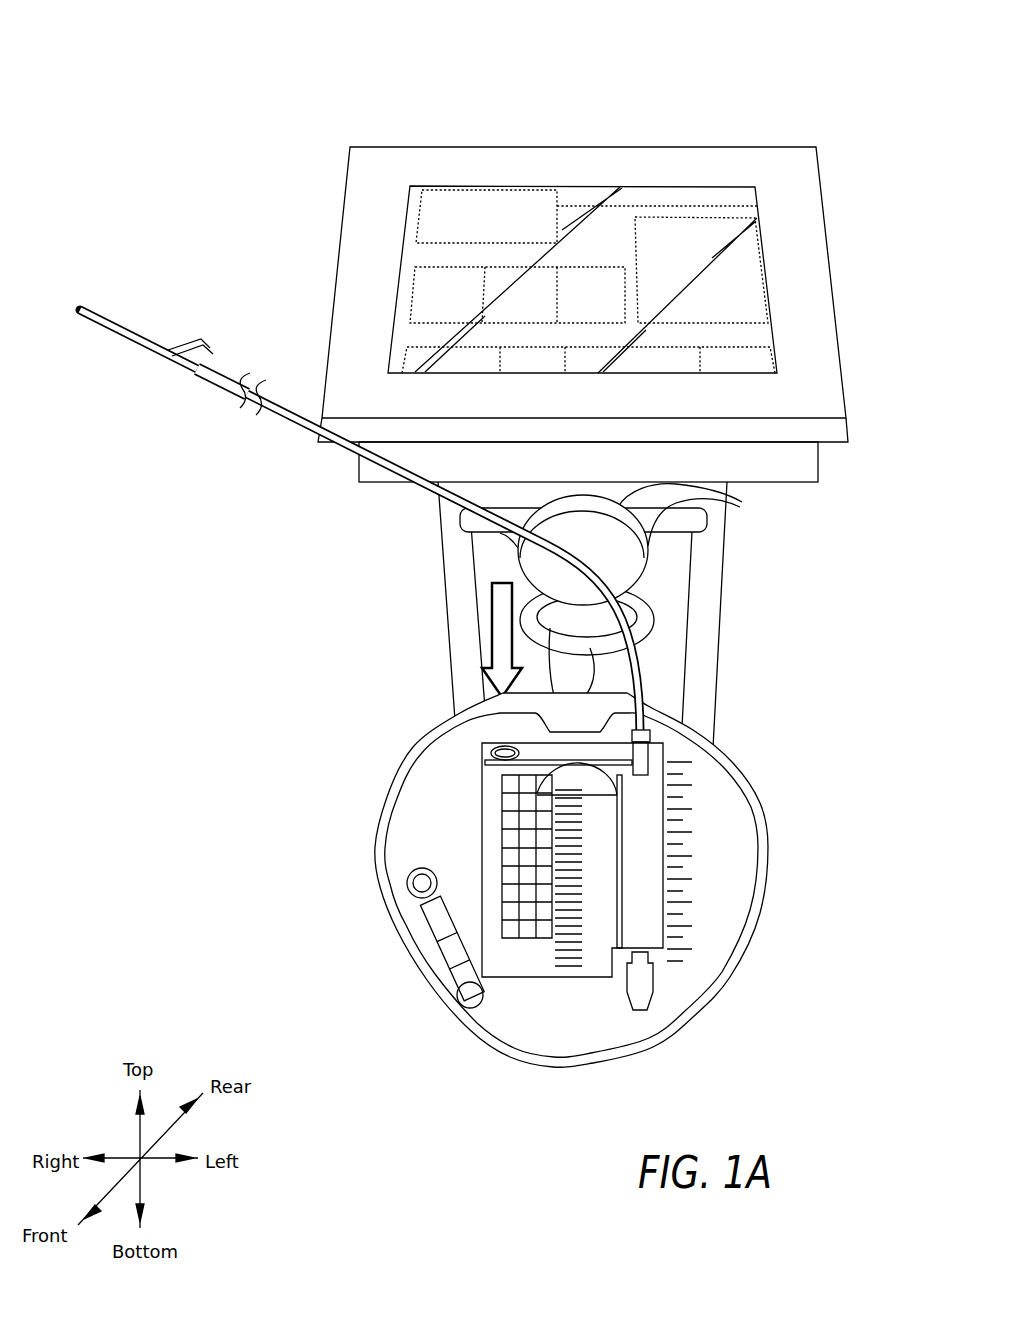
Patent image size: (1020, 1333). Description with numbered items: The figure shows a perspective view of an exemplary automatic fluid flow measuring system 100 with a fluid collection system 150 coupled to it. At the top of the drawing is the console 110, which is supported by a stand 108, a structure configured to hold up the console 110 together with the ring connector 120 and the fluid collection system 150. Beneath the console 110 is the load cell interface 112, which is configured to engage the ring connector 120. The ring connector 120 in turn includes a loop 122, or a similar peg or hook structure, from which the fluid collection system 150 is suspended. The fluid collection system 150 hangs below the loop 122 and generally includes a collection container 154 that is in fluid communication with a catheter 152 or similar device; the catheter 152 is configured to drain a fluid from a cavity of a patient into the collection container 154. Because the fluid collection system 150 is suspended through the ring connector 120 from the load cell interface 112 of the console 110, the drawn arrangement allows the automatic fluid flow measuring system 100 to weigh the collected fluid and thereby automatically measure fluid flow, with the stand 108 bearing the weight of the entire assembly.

The automatic fluid flow measuring system 100 is at (458, 555).
The stand 108 is at (458, 597).
The console 110 is at (353, 273).
The load cell interface 112 is at (700, 503).
The ring connector 120 is at (623, 568).
The loop 122 is at (648, 632).
The fluid collection system 150 is at (533, 897).
The catheter 152 is at (142, 347).
The collection container 154 is at (593, 940).